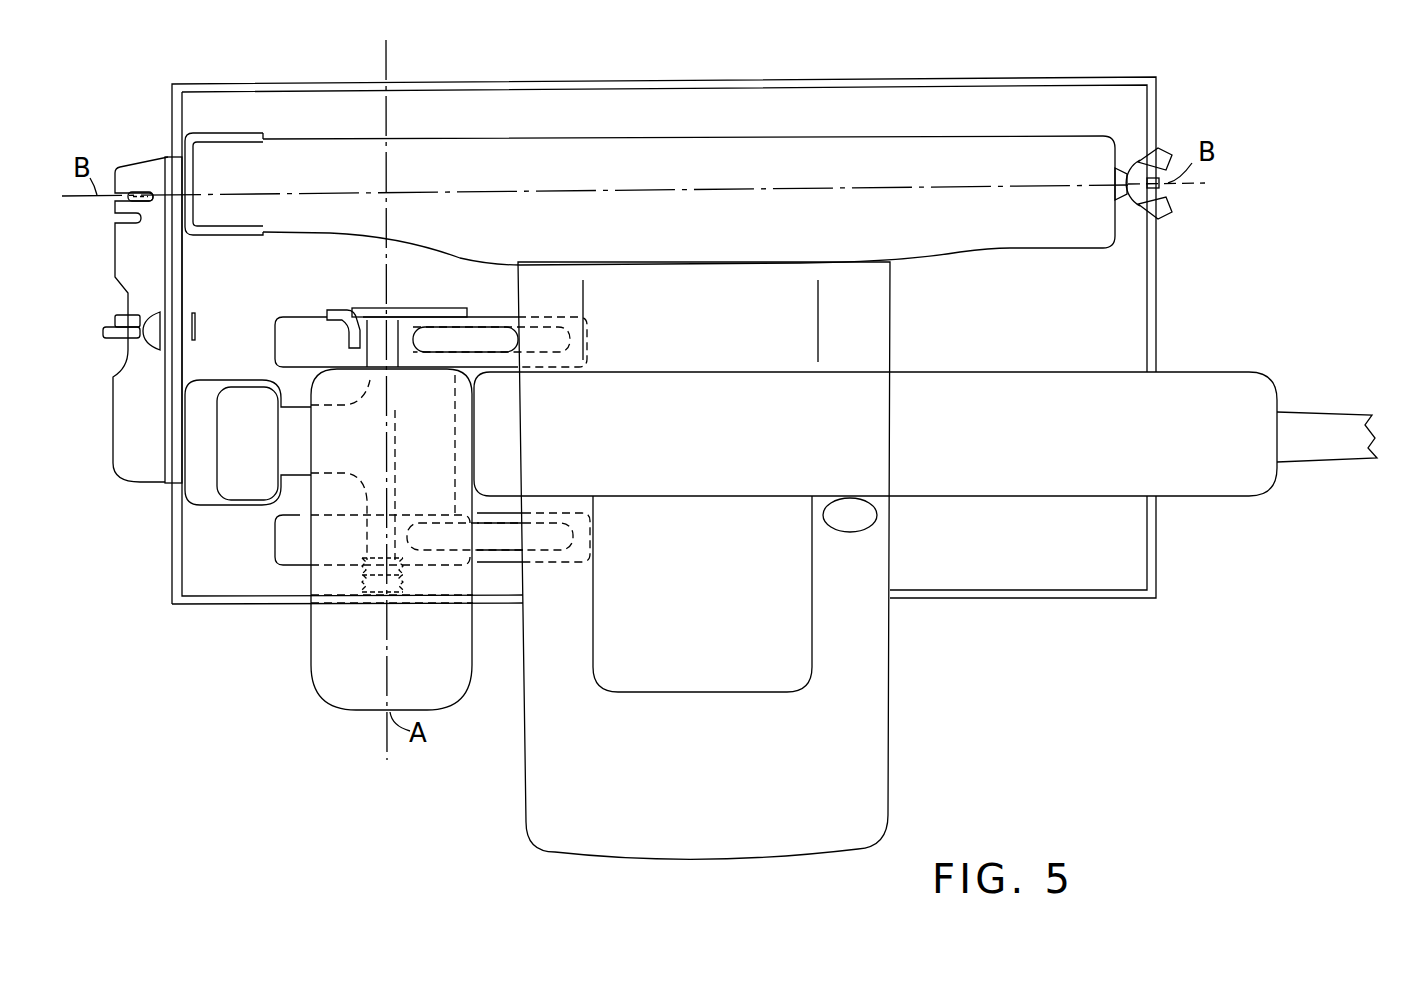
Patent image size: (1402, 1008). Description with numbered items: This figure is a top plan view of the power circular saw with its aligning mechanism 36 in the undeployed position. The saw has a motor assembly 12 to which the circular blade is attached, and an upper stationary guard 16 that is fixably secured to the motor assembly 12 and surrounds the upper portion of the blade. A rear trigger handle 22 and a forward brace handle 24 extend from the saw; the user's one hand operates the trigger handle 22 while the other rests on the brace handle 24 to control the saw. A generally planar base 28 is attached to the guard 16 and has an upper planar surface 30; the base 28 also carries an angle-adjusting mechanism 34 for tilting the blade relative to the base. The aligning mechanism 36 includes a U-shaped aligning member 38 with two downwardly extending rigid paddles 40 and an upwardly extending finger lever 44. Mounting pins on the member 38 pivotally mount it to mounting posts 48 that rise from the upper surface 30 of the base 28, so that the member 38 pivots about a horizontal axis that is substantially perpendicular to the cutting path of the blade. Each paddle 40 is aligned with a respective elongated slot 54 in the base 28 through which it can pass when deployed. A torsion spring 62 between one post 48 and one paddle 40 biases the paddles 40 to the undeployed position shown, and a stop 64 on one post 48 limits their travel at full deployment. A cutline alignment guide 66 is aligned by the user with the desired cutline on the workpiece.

The motor assembly 12 is at (888, 815).
The upper stationary guard 16 is at (1067, 218).
The rear trigger handle 22 is at (1191, 478).
The forward brace handle 24 is at (321, 700).
The base 28 is at (1026, 68).
The upper planar surface 30 is at (1127, 319).
The angle-adjusting mechanism 34 is at (111, 346).
The aligning mechanism 36 is at (299, 270).
The U-shaped aligning member 38 is at (384, 327).
The paddles 40 is at (484, 328).
The finger lever 44 is at (238, 385).
The mounting posts 48 is at (427, 307).
The elongated slots 54 is at (288, 320).
The torsion spring 62 is at (373, 593).
The stop 64 is at (344, 307).
The cutline alignment guide 66 is at (129, 192).